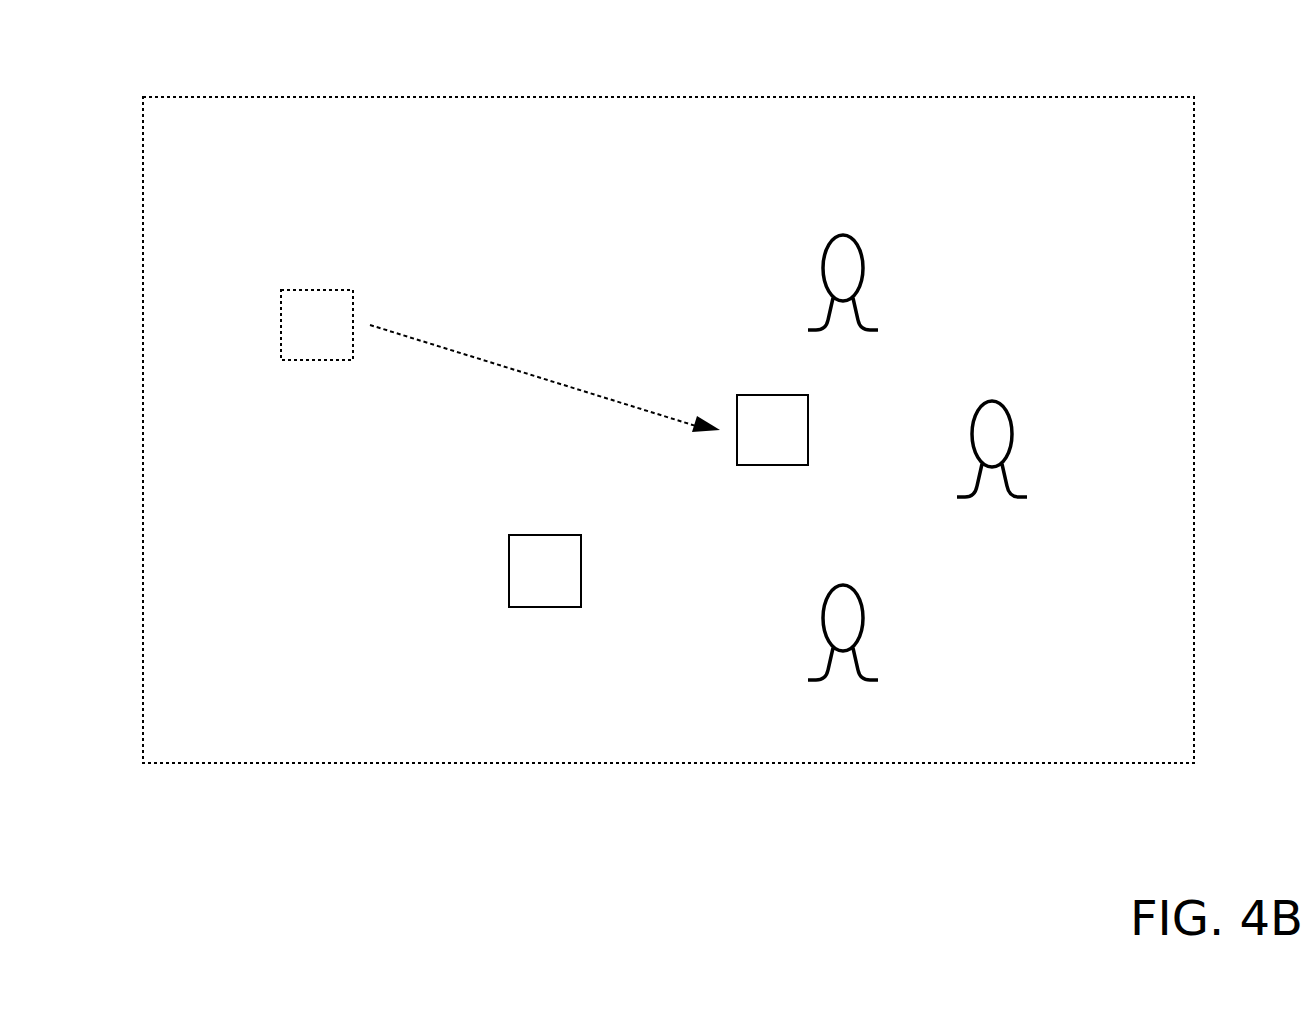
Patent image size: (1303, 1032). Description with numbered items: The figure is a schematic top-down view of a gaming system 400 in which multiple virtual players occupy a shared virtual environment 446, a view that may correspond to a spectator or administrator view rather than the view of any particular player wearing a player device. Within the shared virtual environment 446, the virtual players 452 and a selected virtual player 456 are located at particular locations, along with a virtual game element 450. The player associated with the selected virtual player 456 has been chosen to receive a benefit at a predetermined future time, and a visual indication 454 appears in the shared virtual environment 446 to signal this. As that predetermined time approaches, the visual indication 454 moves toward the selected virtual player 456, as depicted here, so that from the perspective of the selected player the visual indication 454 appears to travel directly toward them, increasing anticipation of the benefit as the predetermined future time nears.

The gaming system 400 is at (180, 57).
The shared virtual environment 446 is at (142, 383).
The virtual game element 450 is at (596, 527).
The virtual players 452 is at (872, 255).
The visual indication 454 is at (758, 391).
The selected virtual player 456 is at (948, 446).